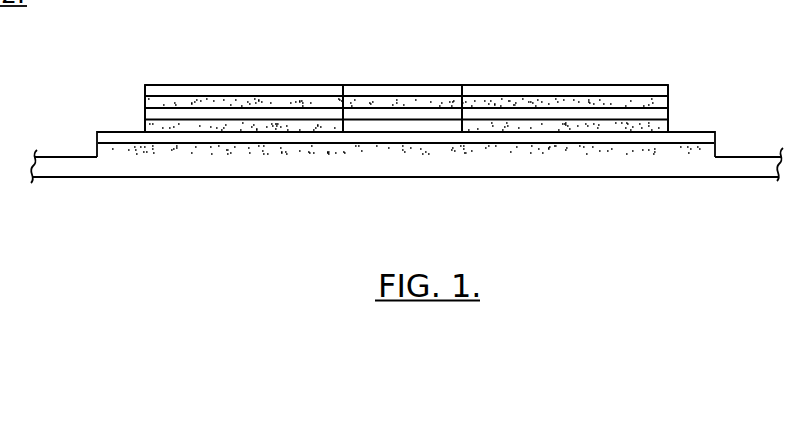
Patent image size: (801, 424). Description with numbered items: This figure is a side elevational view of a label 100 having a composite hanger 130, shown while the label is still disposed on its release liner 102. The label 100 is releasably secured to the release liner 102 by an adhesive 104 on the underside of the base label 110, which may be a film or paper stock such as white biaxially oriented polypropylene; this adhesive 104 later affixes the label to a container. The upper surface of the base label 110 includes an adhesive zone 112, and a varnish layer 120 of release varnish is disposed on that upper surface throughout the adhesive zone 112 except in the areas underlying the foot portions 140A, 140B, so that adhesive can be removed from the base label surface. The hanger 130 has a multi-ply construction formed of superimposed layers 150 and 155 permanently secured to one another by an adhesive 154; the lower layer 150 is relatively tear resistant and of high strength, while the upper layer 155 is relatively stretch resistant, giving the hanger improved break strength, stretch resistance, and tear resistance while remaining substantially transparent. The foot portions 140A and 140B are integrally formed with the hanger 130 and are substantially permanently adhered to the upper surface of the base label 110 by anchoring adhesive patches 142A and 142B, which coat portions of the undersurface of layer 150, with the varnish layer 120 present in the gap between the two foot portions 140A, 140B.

The label 100 is at (466, 50).
The release liner 102 is at (753, 167).
The adhesive 104 is at (618, 153).
The base label 110 is at (687, 140).
The adhesive zone 112 is at (690, 132).
The varnish layer 120 is at (400, 145).
The composite hanger 130 is at (380, 70).
The foot portion 140A is at (280, 60).
The foot portion 140B is at (588, 68).
The anchoring adhesive patch 142A is at (228, 128).
The anchoring adhesive patch 142B is at (530, 128).
The layer 150 is at (152, 117).
The adhesive 154 is at (152, 103).
The layer 155 is at (152, 88).